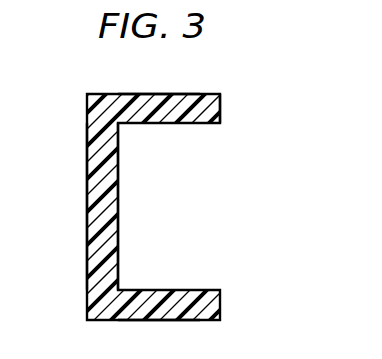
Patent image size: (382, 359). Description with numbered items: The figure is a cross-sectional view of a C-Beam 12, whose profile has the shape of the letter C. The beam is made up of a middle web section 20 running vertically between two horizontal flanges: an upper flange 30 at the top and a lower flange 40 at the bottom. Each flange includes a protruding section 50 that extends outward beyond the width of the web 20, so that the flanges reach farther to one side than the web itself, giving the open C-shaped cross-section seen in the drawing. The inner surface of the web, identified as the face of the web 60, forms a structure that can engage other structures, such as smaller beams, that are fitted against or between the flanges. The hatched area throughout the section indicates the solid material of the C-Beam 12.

The C-Beam 12 is at (88, 142).
The middle web section 20 is at (91, 212).
The upper flange 30 is at (159, 100).
The lower flange 40 is at (157, 303).
The protruding section 50 is at (212, 111).
The face of the web 60 is at (118, 188).